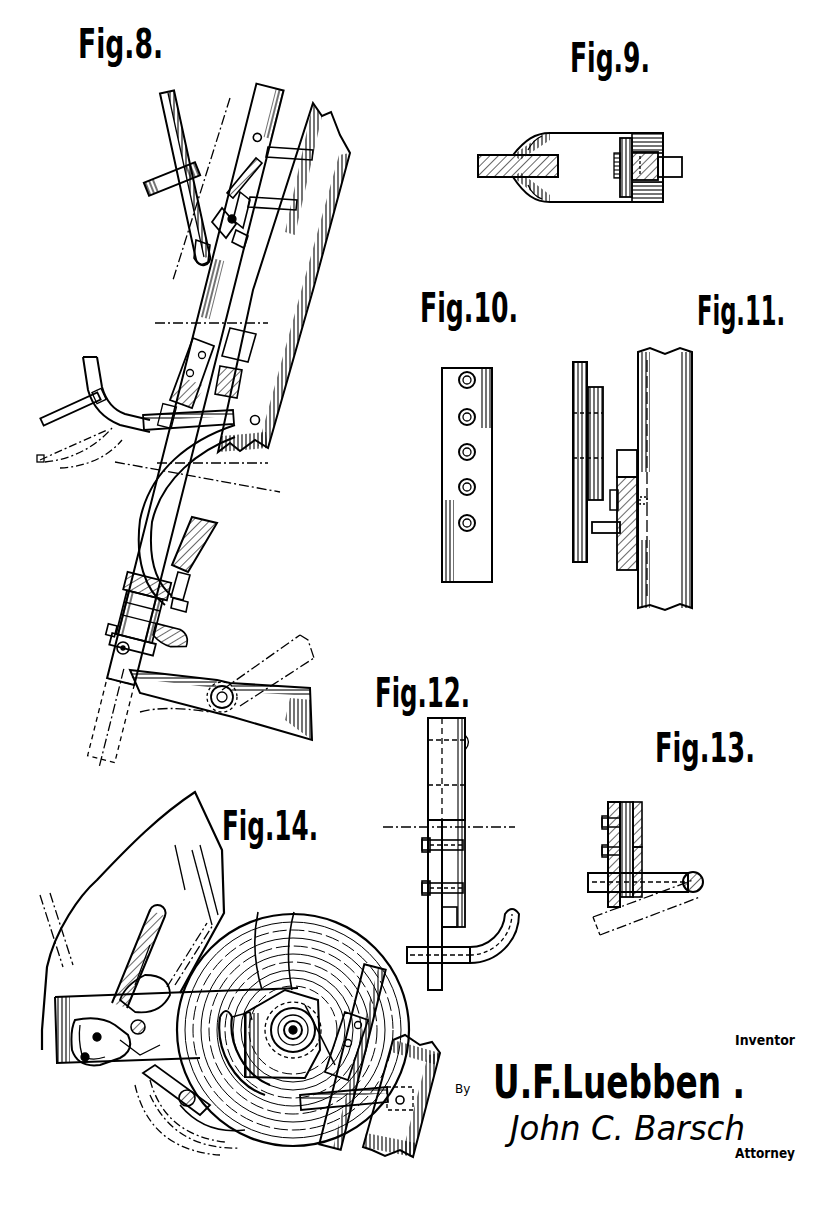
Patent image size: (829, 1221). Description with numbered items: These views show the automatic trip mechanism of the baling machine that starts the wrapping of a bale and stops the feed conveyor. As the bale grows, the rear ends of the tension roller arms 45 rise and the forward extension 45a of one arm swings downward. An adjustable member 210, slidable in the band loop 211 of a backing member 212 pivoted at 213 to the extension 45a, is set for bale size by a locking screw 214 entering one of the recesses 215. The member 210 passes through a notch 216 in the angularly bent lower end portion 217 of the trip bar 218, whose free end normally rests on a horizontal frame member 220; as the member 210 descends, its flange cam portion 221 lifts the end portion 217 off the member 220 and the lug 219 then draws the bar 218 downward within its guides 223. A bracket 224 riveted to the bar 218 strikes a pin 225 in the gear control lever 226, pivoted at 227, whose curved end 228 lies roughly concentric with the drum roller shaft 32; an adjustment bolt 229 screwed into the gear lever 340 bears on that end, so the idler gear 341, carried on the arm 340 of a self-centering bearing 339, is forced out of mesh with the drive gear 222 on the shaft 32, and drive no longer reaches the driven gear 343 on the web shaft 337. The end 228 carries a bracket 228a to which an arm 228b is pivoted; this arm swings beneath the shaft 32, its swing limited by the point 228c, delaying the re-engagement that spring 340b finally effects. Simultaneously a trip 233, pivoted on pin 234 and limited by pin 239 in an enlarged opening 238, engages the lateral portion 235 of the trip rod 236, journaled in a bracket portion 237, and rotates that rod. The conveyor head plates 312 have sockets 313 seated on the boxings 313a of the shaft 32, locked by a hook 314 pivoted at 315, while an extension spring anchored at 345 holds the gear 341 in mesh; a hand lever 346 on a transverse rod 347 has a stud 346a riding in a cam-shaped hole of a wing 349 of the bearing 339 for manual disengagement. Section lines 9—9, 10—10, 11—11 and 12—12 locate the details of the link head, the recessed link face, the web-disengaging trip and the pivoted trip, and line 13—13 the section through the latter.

In FIG. 8, the section line 9— 9 is at (122, 457).
In FIG. 8, the section line 10— 10 is at (155, 648).
In FIG. 8, the section line 11— 11 is at (255, 323).
In FIG. 8, the section line 12— 12 is at (210, 87).
In FIG. 12, the section line 13— 13 is at (383, 803).
In FIG. 14, the drum roller shaft 32 is at (280, 1000).
In FIG. 8, the lower tension roller arm 45 is at (300, 715).
In FIG. 8, the forward extension 45a is at (180, 690).
In FIG. 8, the adjustable member 210 is at (140, 604).
In FIG. 9, the adjustable member 210 is at (660, 164).
In FIG. 10, the adjustable member 210 is at (483, 462).
In FIG. 8, the band loop 211 is at (186, 606).
In FIG. 8, the backing member 212 is at (140, 617).
In FIG. 8, the pivot connection 213 is at (118, 653).
In FIG. 8, the adjustment locking screw 214 is at (113, 632).
In FIG. 10, the recesses 215 is at (472, 522).
In FIG. 9, the slot or notch 216 is at (663, 179).
In FIG. 8, the angularly bent lower end portion 217 is at (140, 590).
In FIG. 9, the angularly bent lower end portion 217 is at (588, 202).
In FIG. 8, the trip bar 218 is at (203, 310).
In FIG. 9, the trip bar 218 is at (495, 155).
In FIG. 11, the trip bar 218 is at (585, 362).
In FIG. 12, the trip bar 218 is at (432, 928).
In FIG. 13, the trip bar 218 is at (613, 802).
In FIG. 14, the trip bar 218 is at (367, 1000).
In FIG. 8, the cross-bar or lug 219 is at (196, 520).
In FIG. 9, the cross-bar or lug 219 is at (629, 138).
In FIG. 8, the horizontal frame member 220 is at (191, 632).
In FIG. 8, the flange cam portion 221 is at (207, 560).
In FIG. 9, the flange cam portion 221 is at (683, 167).
In FIG. 14, the drive gear 222 is at (300, 948).
In FIG. 8, the guides 223 is at (285, 187).
In FIG. 11, the guides 223 is at (665, 479).
In FIG. 14, the guides 223 is at (401, 1096).
In FIG. 8, the bracket 224 is at (180, 377).
In FIG. 11, the bracket 224 is at (603, 403).
In FIG. 14, the bracket 224 is at (387, 1020).
In FIG. 8, the pin 225 is at (165, 413).
In FIG. 11, the pin 225 is at (603, 537).
In FIG. 8, the gear control lever 226 is at (207, 437).
In FIG. 11, the gear control lever 226 is at (630, 570).
In FIG. 14, the gear control lever 226 is at (352, 1110).
In FIG. 8, the pivot 227 is at (260, 418).
In FIG. 11, the pivot 227 is at (644, 498).
In FIG. 14, the pivot 227 is at (407, 1104).
In FIG. 8, the curved free end 228 is at (108, 369).
In FIG. 14, the curved free end 228 is at (222, 1012).
In FIG. 14, the bracket 228a is at (230, 1118).
In FIG. 14, the arm 228b is at (232, 1035).
In FIG. 14, the point 228c is at (237, 1140).
In FIG. 8, the adjustment bolt 229 is at (53, 415).
In FIG. 8, the trip 233 is at (242, 194).
In FIG. 12, the trip 233 is at (453, 881).
In FIG. 13, the trip 233 is at (630, 871).
In FIG. 8, the pin 234 is at (256, 158).
In FIG. 12, the pin 234 is at (463, 846).
In FIG. 13, the pin 234 is at (645, 818).
In FIG. 8, the laterally extending portion 235 is at (195, 247).
In FIG. 12, the laterally extending portion 235 is at (450, 963).
In FIG. 13, the laterally extending portion 235 is at (598, 873).
In FIG. 8, the trip rod 236 is at (162, 130).
In FIG. 12, the trip rod 236 is at (520, 914).
In FIG. 13, the trip rod 236 is at (705, 890).
In FIG. 8, the bracket portion 237 is at (148, 192).
In FIG. 8, the enlarged opening 238 is at (229, 215).
In FIG. 8, the pin 239 is at (243, 233).
In FIG. 12, the pin 239 is at (463, 904).
In FIG. 13, the pin 239 is at (645, 850).
In FIG. 14, the head plates 312 is at (262, 938).
In FIG. 14, the sockets 313 is at (268, 1050).
In FIG. 14, the boxings 313a is at (314, 1012).
In FIG. 14, the hook 314 is at (298, 938).
In FIG. 14, the hook pivot 315 is at (243, 998).
In FIG. 14, the web drive shaft 337 is at (145, 976).
In FIG. 14, the self-centering bearings 339 is at (150, 946).
In FIG. 14, the gear lever arm 340 is at (145, 1080).
In FIG. 14, the spring 340b is at (138, 1060).
In FIG. 14, the intermediate idler spur gear 341 is at (138, 1128).
In FIG. 14, the driven gear 343 is at (192, 955).
In FIG. 14, the spring attachment point 345 is at (193, 953).
In FIG. 14, the hand lever 346 is at (157, 912).
In FIG. 14, the stud 346a is at (95, 1000).
In FIG. 14, the transverse rod 347 is at (86, 1062).
In FIG. 14, the wing 349 is at (75, 1055).